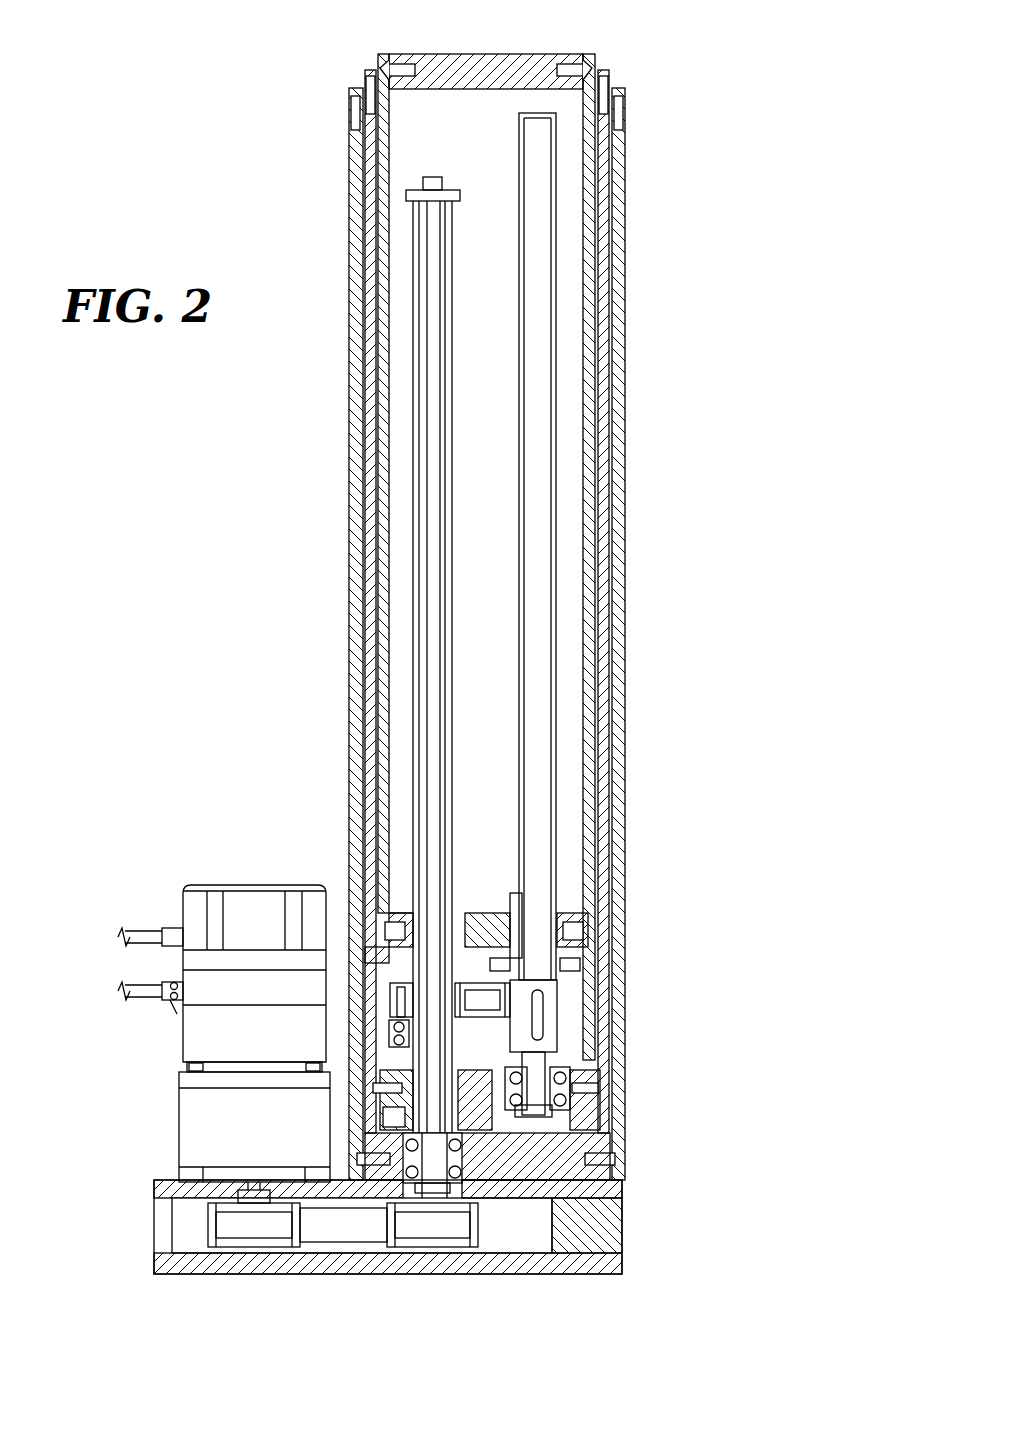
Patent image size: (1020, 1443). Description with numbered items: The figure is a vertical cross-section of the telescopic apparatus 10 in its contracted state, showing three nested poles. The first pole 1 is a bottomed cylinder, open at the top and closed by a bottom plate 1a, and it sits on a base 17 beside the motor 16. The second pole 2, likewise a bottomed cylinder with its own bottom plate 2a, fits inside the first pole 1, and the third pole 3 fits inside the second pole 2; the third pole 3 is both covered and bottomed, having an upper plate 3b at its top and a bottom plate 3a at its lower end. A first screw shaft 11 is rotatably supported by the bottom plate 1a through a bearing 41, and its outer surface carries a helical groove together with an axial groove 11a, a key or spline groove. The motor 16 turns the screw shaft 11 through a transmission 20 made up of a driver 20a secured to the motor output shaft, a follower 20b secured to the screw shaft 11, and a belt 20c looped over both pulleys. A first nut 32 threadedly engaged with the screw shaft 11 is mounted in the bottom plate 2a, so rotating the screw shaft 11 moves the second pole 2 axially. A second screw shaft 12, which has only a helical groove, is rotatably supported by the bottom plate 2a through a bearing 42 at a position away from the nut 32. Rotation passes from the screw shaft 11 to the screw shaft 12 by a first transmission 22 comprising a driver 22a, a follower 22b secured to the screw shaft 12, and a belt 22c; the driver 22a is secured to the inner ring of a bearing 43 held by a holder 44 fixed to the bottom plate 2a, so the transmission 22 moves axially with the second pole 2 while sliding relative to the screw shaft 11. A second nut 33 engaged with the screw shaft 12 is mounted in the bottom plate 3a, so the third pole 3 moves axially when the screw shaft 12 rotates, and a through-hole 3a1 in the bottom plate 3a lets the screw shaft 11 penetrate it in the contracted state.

The telescopic apparatus 10 is at (633, 72).
The first pole 1 is at (615, 668).
The bottom plate 1a is at (572, 1182).
The second pole 2 is at (604, 518).
The bottom plate 2a is at (588, 1102).
The third pole 3 is at (590, 384).
The bottom plate 3a is at (580, 946).
The through-hole 3a1 is at (407, 913).
The upper plate 3b is at (488, 62).
The first screw shaft 11 is at (460, 655).
The axial groove 11a is at (440, 507).
The second screw shaft 12 is at (530, 226).
The motor 16 is at (197, 1040).
The base 17 is at (418, 1223).
The transmission 20 is at (337, 1263).
The driver 20a is at (230, 1235).
The follower 20b is at (411, 1232).
The belt 20c is at (358, 1230).
The first transmission 22 is at (352, 940).
The driver 22a is at (395, 1015).
The follower 22b is at (562, 1000).
The belt 22c is at (487, 1005).
The first nut 32 is at (535, 1190).
The second nut 33 is at (518, 900).
The bearing 41 is at (483, 1105).
The bearing 42 is at (585, 1075).
The bearing 43 is at (398, 1030).
The holder 44 is at (380, 1048).